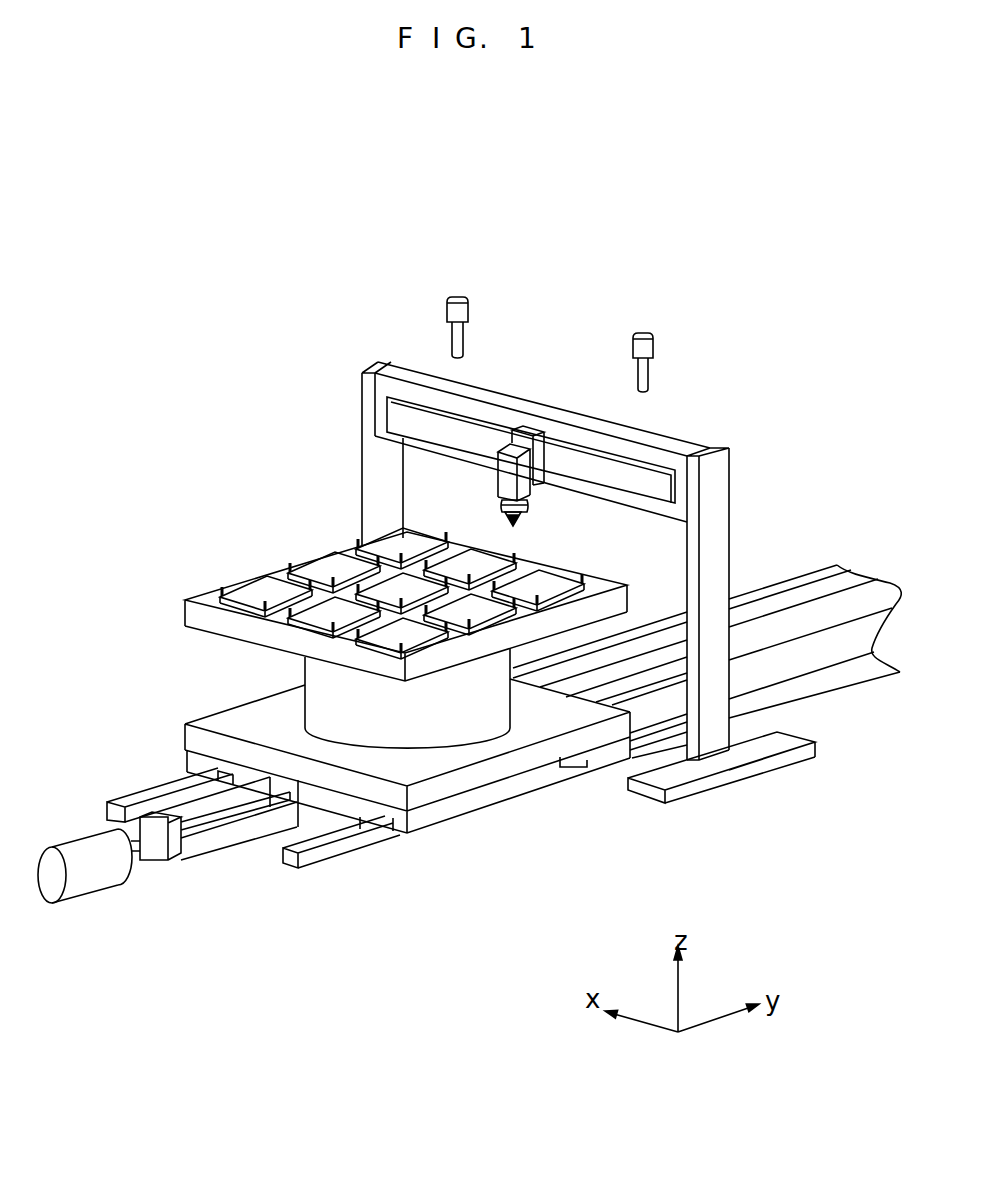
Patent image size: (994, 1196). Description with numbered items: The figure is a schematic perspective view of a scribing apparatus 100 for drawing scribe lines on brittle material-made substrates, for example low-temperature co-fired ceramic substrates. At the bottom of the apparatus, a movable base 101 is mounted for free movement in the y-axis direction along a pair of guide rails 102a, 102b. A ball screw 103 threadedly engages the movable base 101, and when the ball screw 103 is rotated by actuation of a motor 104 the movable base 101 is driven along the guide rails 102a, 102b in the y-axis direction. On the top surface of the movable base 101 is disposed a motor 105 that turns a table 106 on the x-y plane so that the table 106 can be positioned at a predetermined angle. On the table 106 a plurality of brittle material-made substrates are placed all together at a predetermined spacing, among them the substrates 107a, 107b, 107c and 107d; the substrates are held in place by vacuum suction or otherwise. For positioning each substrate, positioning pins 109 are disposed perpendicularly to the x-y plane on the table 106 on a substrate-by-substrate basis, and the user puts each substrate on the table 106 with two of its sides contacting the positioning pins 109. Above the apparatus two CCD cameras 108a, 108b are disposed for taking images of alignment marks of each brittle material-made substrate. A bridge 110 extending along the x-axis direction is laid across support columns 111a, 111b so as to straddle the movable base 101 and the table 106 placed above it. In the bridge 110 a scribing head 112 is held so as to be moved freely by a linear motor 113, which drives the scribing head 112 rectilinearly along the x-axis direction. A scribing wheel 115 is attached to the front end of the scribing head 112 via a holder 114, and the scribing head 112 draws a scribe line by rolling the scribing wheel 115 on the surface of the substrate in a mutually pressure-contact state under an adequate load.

The scribing apparatus 100 is at (258, 266).
The movable base 101 is at (450, 778).
The guide rail 102a is at (157, 785).
The guide rail 102b is at (783, 703).
The ball screw 103 is at (200, 828).
The motor 104 is at (80, 887).
The motor 105 is at (485, 713).
The table 106 is at (185, 615).
The brittle material-made substrate 107a is at (250, 596).
The brittle material-made substrate 107b is at (323, 569).
The brittle material-made substrate 107c is at (398, 545).
The brittle material-made substrate 107d is at (327, 607).
The CCD camera 108a is at (460, 296).
The CCD camera 108b is at (651, 332).
The positioning pins 109 is at (264, 606).
The bridge 110 is at (668, 440).
The support column 111a is at (730, 538).
The support column 111b is at (370, 442).
The scribing head 112 is at (505, 445).
The linear motor 113 is at (675, 490).
The holder 114 is at (527, 517).
The scribing wheel 115 is at (515, 525).